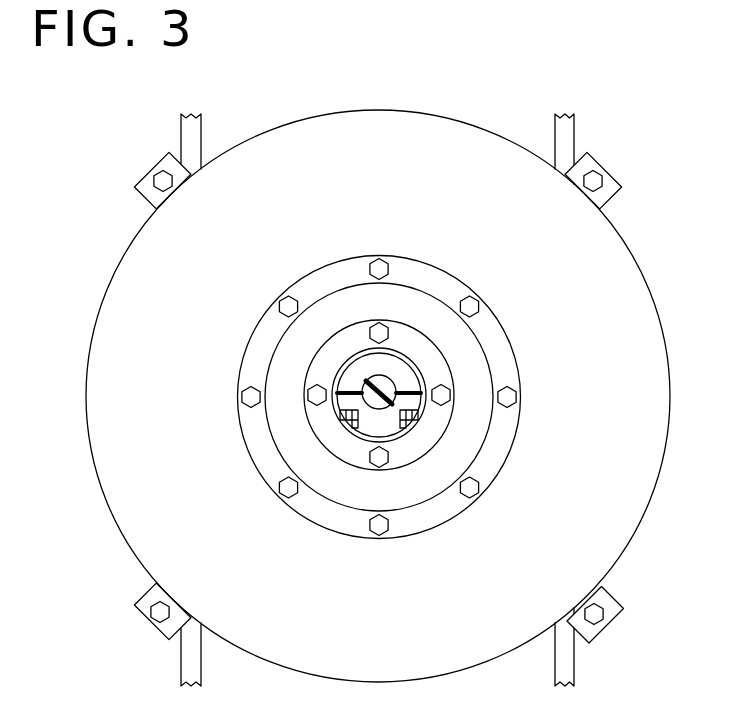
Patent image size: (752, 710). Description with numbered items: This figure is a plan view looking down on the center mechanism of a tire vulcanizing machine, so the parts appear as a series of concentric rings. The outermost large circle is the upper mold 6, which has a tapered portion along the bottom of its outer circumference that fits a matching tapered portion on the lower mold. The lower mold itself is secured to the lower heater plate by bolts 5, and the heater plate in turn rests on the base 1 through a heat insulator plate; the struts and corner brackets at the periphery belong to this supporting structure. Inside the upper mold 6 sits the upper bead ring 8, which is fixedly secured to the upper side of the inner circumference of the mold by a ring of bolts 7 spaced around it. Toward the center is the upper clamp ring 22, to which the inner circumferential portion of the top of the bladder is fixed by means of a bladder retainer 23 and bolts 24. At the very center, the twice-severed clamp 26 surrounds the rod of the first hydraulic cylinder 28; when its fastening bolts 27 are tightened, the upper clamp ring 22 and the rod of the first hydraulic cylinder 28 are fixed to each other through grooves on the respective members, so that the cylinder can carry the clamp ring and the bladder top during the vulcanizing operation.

The base 1 is at (575, 137).
The bolts 5 is at (620, 615).
The upper mold 6 is at (626, 537).
The bolts 7 is at (243, 399).
The upper bead ring 8 is at (415, 302).
The upper clamp ring 22 is at (430, 375).
The bladder retainer 23 is at (369, 305).
The bolts 24 is at (510, 408).
The twice-severed clamp 26 is at (398, 368).
The bolts 27 is at (346, 428).
The first hydraulic cylinder 28 is at (363, 380).